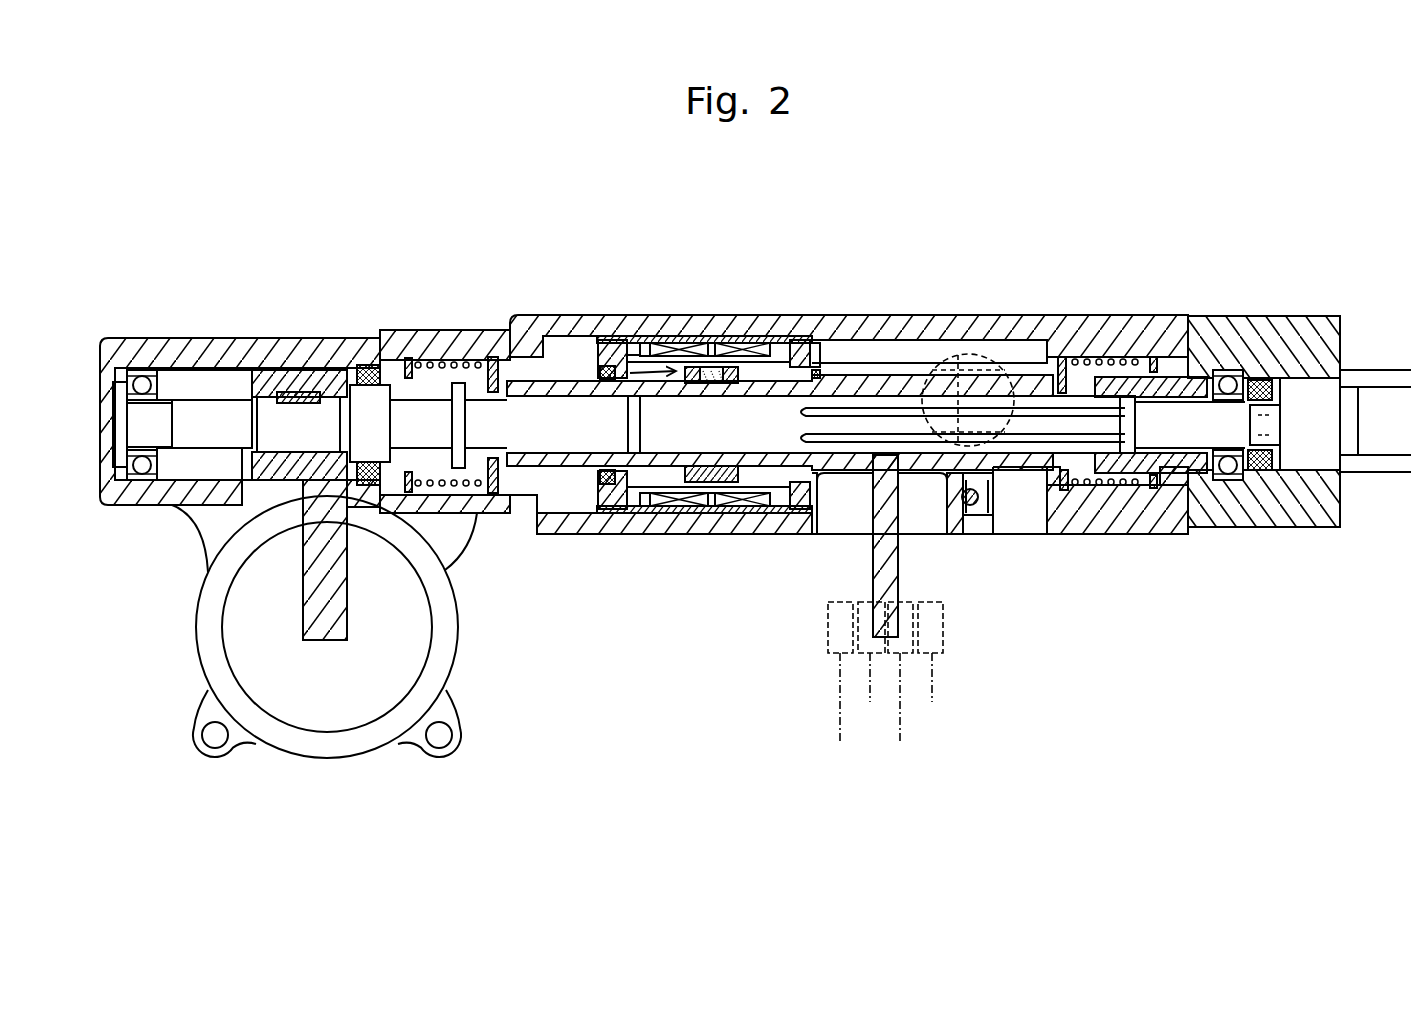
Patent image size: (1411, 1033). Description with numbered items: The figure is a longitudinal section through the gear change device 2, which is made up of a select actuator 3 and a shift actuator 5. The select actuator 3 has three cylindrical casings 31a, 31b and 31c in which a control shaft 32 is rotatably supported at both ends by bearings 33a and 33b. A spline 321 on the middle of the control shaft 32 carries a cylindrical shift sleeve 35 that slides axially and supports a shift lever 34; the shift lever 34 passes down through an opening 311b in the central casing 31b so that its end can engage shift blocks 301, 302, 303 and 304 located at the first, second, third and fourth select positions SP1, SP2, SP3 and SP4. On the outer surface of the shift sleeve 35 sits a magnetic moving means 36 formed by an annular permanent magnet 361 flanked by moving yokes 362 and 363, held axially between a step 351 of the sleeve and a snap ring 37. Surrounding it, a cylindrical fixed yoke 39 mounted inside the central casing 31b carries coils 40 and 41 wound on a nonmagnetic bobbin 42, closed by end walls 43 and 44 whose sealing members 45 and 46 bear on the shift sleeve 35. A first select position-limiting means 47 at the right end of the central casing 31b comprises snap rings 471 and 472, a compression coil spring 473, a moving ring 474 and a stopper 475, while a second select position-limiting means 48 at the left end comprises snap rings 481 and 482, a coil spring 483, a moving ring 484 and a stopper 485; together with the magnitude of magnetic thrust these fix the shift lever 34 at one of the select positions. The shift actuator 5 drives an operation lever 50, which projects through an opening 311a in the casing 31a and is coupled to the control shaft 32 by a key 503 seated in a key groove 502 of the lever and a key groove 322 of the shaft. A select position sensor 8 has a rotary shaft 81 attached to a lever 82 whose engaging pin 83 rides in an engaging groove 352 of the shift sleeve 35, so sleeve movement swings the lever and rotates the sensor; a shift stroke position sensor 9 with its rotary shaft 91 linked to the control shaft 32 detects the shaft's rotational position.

The gear change device 2 is at (540, 236).
The select actuator 3 is at (752, 313).
The shift actuator 5 is at (172, 694).
The select position sensor 8 is at (941, 356).
The shift stroke position sensor 9 is at (1385, 368).
The casing 31a is at (213, 338).
The central casing 31b is at (893, 315).
The casing 31c is at (1278, 316).
The control shaft 32 is at (480, 405).
The bearing 33a is at (137, 368).
The bearing 33b is at (1228, 370).
The shift lever 34 is at (898, 548).
The shift sleeve 35 is at (883, 381).
The magnetic moving means 36 is at (606, 336).
The snap ring 37 is at (634, 412).
The fixed yoke 39 is at (690, 343).
The coil 40 is at (740, 513).
The coil 41 is at (677, 513).
The bobbin 42 is at (640, 336).
The end wall 43 is at (815, 342).
The end wall 44 is at (602, 364).
The sealing member 45 is at (830, 340).
The sealing member 46 is at (547, 330).
The first select position-limiting means 47 is at (1062, 357).
The second select position-limiting means 48 is at (430, 358).
The operation lever 50 is at (310, 578).
The rotary shaft 81 is at (958, 355).
The lever 82 is at (1024, 470).
The engaging pin 83 is at (978, 515).
The rotary shaft 91 is at (1283, 432).
The shift block 301 is at (945, 635).
The shift block 302 is at (900, 602).
The shift block 303 is at (862, 602).
The shift block 304 is at (830, 625).
The opening 311a is at (212, 540).
The opening 311b is at (843, 518).
The spline 321 is at (1040, 425).
The key groove 322 is at (283, 405).
The step 351 is at (757, 336).
The engaging groove 352 is at (968, 508).
The permanent magnet 361 is at (712, 384).
The moving yoke 362 is at (745, 384).
The moving yoke 363 is at (693, 384).
The snap ring 471 is at (1090, 534).
The snap ring 472 is at (1175, 534).
The compression coil spring 473 is at (1150, 534).
The moving ring 474 is at (1113, 534).
The stopper 475 is at (1098, 377).
The snap ring 481 is at (500, 495).
The snap ring 482 is at (410, 495).
The coil spring 483 is at (408, 360).
The moving ring 484 is at (485, 513).
The stopper 485 is at (490, 360).
The key groove 502 is at (281, 392).
The key 503 is at (305, 372).
The first select position SP1 is at (950, 694).
The second select position SP2 is at (901, 712).
The third select position SP3 is at (876, 694).
The fourth select position SP4 is at (836, 712).